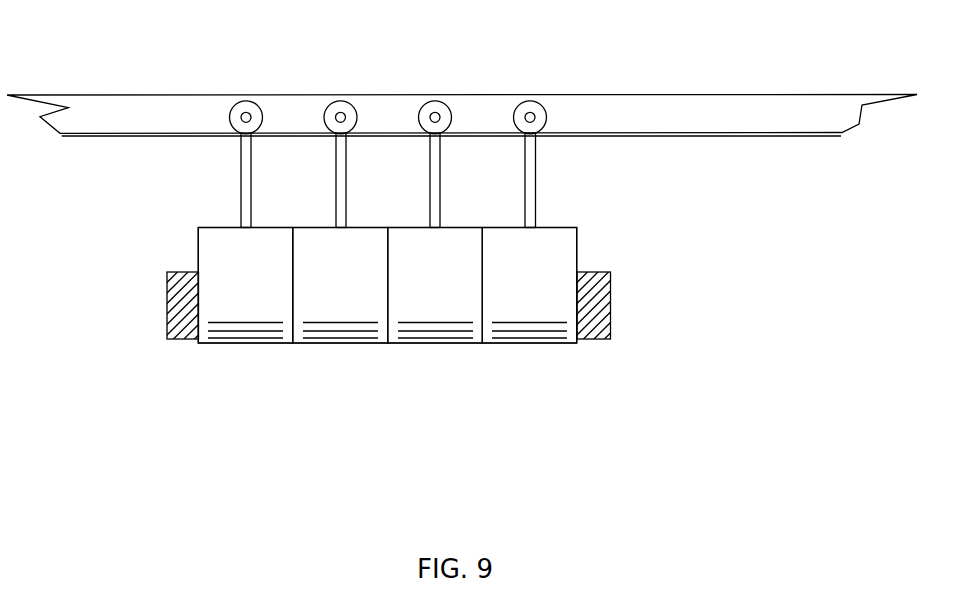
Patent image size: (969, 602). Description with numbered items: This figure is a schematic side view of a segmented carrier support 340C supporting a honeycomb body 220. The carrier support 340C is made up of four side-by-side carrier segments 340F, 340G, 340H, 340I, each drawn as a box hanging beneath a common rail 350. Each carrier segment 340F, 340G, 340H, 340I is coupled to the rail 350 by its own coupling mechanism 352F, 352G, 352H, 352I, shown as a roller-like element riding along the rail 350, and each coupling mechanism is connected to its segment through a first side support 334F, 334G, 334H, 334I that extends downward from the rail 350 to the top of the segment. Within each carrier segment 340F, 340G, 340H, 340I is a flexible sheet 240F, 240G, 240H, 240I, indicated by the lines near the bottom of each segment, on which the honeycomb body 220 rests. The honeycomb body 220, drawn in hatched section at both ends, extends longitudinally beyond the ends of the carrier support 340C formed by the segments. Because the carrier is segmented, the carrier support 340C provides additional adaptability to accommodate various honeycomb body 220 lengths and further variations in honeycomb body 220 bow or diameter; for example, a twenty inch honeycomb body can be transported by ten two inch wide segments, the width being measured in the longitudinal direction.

The rail 350 is at (672, 124).
The coupling mechanism 352I is at (232, 110).
The coupling mechanism 352H is at (327, 110).
The coupling mechanism 352G is at (422, 110).
The coupling mechanism 352F is at (517, 110).
The first side support 334I is at (241, 191).
The first side support 334H is at (380, 192).
The first side support 334G is at (440, 208).
The first side support 334F is at (536, 204).
The carrier support 340C is at (423, 463).
The carrier segment 340I is at (267, 285).
The carrier segment 340H is at (372, 285).
The carrier segment 340G is at (467, 285).
The carrier segment 340F is at (558, 285).
The flexible sheet 240I is at (232, 307).
The flexible sheet 240H is at (327, 307).
The flexible sheet 240G is at (417, 302).
The flexible sheet 240F is at (548, 302).
The honeycomb body 220 is at (168, 270).